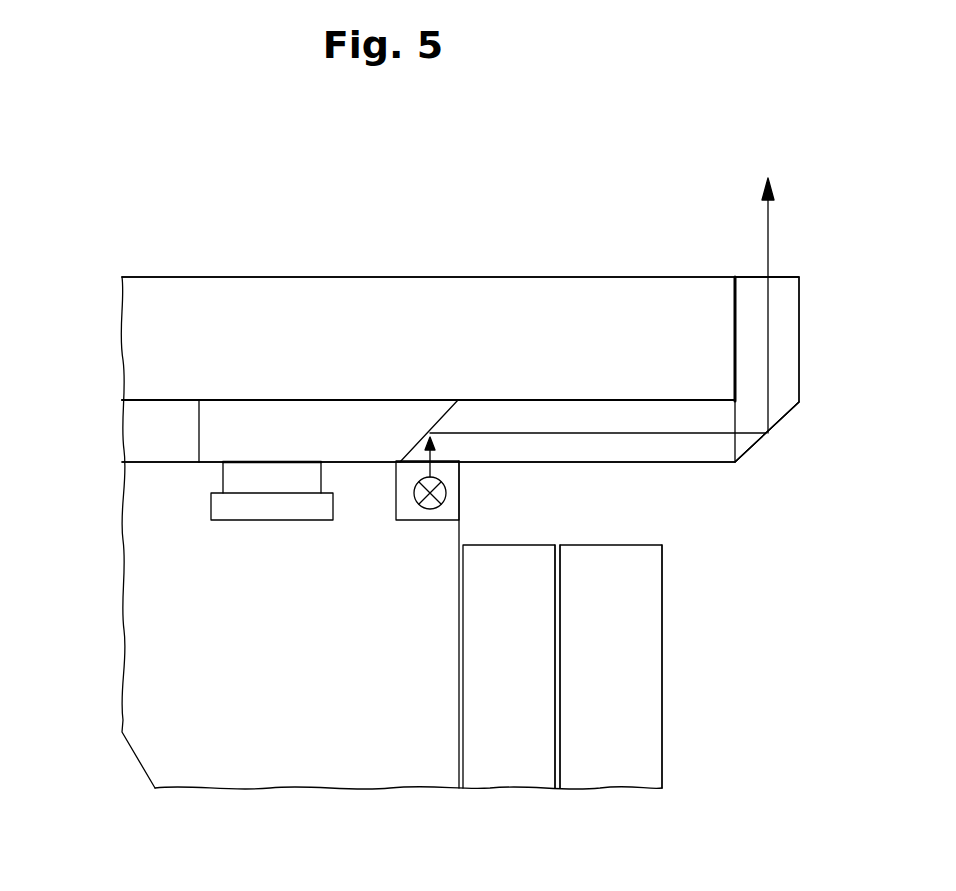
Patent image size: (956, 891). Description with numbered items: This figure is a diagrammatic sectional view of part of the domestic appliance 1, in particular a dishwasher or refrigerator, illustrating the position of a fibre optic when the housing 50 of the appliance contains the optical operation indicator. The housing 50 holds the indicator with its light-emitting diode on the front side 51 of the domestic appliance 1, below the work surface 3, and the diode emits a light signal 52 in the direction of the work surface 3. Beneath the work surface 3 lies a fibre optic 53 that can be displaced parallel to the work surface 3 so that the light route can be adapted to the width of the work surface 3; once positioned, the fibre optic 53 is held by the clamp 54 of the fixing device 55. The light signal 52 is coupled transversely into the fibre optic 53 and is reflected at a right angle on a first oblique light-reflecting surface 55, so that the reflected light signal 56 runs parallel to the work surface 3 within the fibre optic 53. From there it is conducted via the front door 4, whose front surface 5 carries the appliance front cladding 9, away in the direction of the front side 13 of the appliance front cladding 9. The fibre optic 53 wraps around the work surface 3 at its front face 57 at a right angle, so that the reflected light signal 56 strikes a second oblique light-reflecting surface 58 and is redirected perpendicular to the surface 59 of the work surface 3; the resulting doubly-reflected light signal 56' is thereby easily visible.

The domestic appliance 1 is at (280, 758).
The work surface 3 is at (158, 313).
The front door 4 is at (495, 765).
The front surface 5 is at (559, 764).
The appliance front cladding 9 is at (632, 775).
The front side of the appliance front cladding 13 is at (663, 700).
The housing 50 is at (162, 425).
The front side 51 is at (461, 527).
The light signal 52 is at (430, 472).
The fibre optic 53 is at (780, 352).
The clamp 54 is at (300, 462).
The fixing device / first oblique light-reflecting surface 55 is at (441, 418).
The reflected light signal 56 is at (482, 469).
The doubly-reflected light signal 56' is at (813, 305).
The front face 57 is at (733, 302).
The second oblique light-reflecting surface 58 is at (780, 426).
The surface of the work surface 59 is at (387, 277).